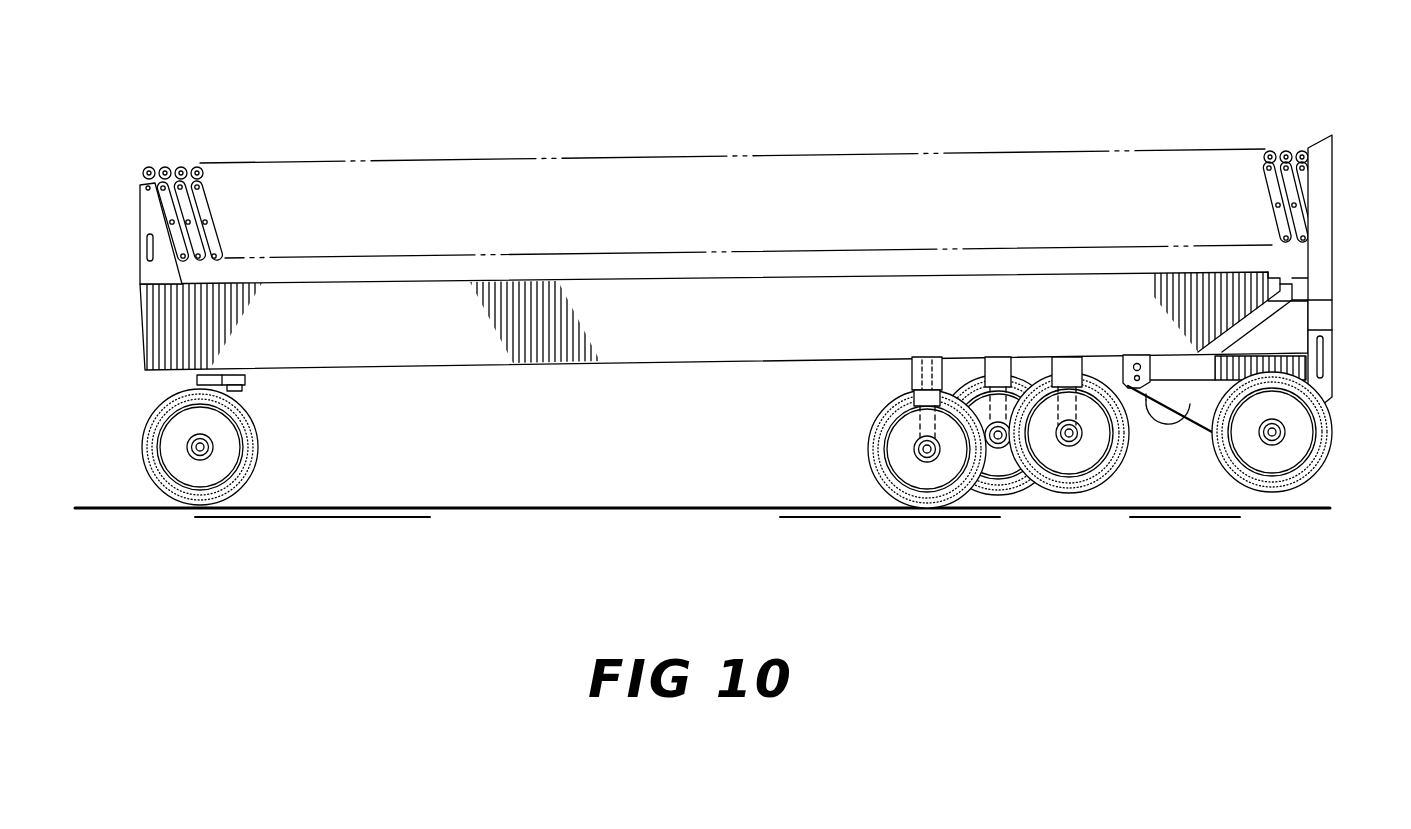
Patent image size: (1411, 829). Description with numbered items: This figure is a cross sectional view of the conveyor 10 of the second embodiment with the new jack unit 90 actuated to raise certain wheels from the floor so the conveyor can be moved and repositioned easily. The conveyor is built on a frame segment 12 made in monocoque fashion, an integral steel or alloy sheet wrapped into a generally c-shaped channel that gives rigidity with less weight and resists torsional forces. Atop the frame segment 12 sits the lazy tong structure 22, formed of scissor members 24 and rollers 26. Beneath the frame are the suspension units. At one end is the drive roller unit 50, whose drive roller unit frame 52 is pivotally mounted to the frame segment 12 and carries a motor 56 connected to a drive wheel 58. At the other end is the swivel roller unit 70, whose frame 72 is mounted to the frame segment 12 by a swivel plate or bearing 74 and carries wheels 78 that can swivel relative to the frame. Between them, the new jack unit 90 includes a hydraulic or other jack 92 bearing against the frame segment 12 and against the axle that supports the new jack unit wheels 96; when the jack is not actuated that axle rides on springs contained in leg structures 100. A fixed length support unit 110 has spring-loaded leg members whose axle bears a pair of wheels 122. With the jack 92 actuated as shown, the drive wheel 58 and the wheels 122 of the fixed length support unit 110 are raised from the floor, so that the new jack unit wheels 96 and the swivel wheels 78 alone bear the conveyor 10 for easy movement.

The conveyor 10 is at (370, 78).
The frame segment 12 is at (729, 275).
The lazy tong structure 22 is at (683, 152).
The scissor member 24 is at (204, 206).
The roller 26 is at (197, 167).
The drive roller unit 50 is at (1335, 395).
The drive roller unit frame 52 is at (1172, 368).
The motor 56 is at (1167, 425).
The drive wheel 58 is at (1310, 470).
The swivel roller unit 70 is at (236, 447).
The frame 72 is at (236, 385).
The swivel plate or bearing 74 is at (268, 378).
The wheel 78 is at (255, 468).
The new jack unit 90 is at (905, 384).
The jack 92 is at (915, 358).
The new jack unit wheel 96 is at (870, 459).
The leg structure 100 is at (938, 372).
The fixed length support unit 110 is at (1067, 358).
The wheel 122 is at (1063, 497).